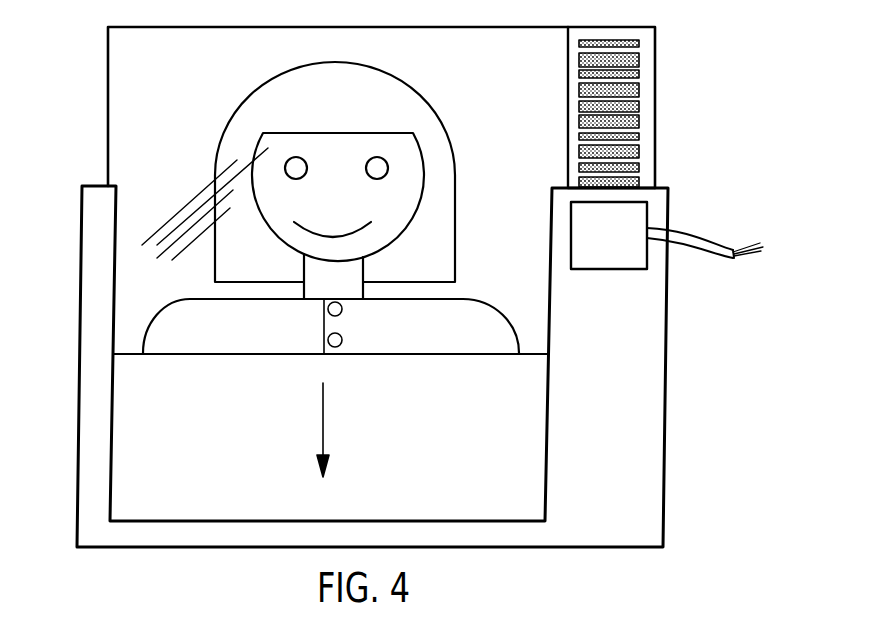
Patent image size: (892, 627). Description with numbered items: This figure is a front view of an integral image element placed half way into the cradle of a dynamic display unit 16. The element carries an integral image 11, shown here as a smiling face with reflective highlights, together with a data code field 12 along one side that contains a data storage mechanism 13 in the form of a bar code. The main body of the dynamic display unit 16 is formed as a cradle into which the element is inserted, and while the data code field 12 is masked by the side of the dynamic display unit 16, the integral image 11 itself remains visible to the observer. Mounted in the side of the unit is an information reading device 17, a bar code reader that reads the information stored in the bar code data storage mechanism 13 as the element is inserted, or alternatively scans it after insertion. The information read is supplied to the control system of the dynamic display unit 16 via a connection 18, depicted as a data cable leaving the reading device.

The integral image 11 is at (127, 183).
The data code field 12 is at (650, 67).
The data storage mechanism 13 is at (640, 125).
The dynamic display unit 16 is at (94, 484).
The information reading device 17 is at (626, 259).
The connection 18 is at (718, 258).